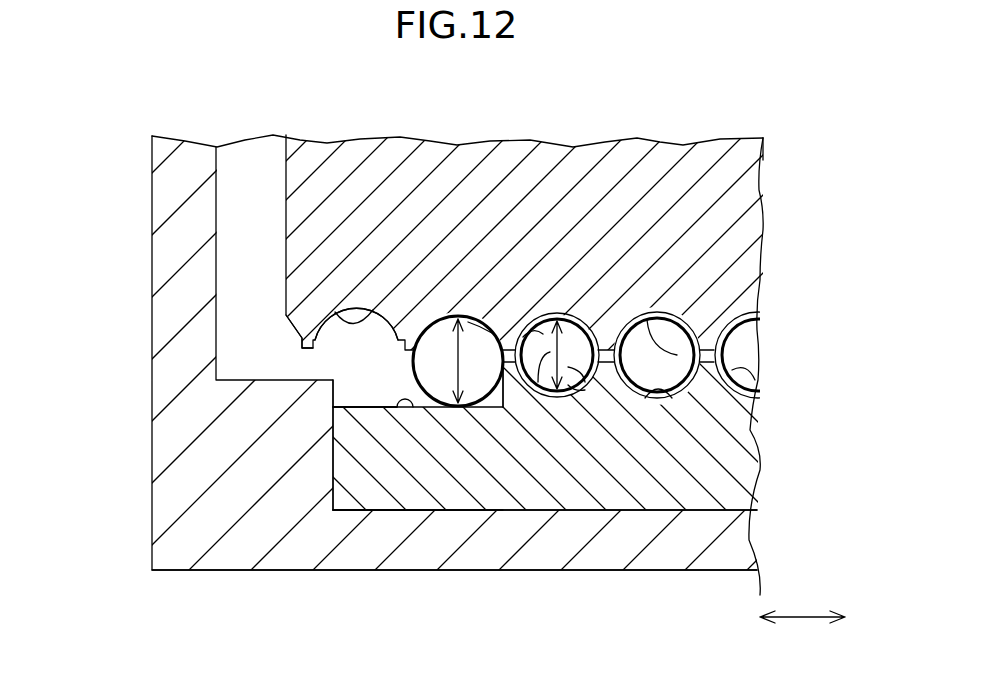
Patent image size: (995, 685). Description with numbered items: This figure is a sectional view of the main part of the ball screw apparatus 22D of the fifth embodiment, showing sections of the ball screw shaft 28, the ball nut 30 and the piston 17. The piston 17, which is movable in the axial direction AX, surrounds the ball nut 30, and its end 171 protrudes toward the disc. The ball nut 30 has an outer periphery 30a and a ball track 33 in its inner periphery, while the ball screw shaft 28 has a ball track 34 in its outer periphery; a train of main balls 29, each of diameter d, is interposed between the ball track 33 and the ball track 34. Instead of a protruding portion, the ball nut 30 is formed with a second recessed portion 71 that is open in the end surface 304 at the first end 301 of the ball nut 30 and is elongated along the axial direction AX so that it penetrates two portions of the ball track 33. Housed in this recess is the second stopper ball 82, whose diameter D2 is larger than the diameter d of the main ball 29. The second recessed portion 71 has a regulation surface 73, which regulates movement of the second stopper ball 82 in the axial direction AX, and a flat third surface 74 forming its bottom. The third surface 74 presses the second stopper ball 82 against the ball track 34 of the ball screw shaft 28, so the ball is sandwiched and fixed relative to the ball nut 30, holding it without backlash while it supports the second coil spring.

The piston 17 is at (138, 535).
The end of the piston 171 is at (172, 563).
The ball screw apparatus 22D is at (718, 133).
The ball screw shaft 28 is at (598, 131).
The main ball 29 is at (747, 337).
The ball nut 30 is at (460, 522).
The outer periphery of the ball nut 30a is at (342, 511).
The first end of the ball nut 301 is at (363, 450).
The end surface of the first end 304 is at (332, 480).
The ball track of the ball nut 33 is at (690, 396).
The ball track of the ball screw shaft 34 is at (524, 322).
The second recessed portion 71 is at (365, 393).
The regulation surface 73 is at (502, 396).
The third surface 74 is at (398, 511).
The second stopper ball 82 is at (433, 342).
The diameter of the second stopper ball D2 is at (417, 366).
The diameter of the main ball d is at (535, 395).
The axial direction AX is at (803, 615).